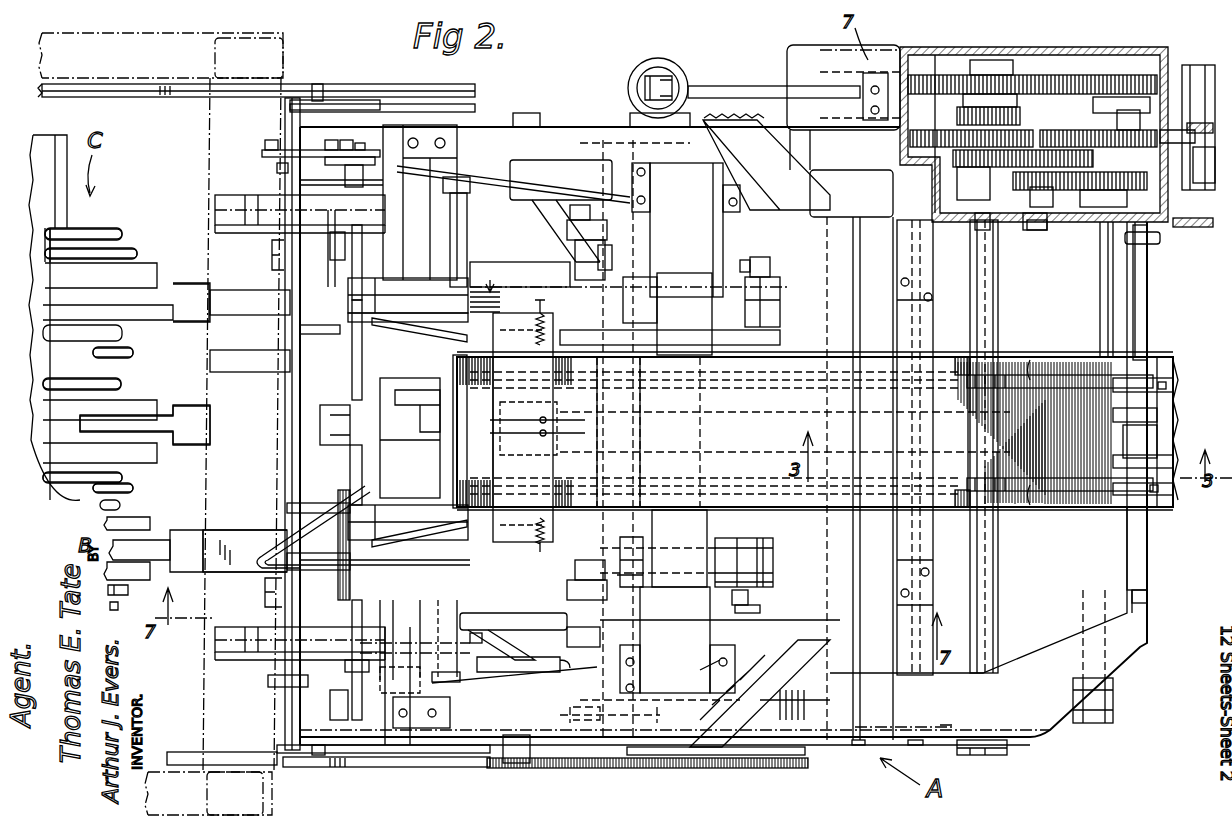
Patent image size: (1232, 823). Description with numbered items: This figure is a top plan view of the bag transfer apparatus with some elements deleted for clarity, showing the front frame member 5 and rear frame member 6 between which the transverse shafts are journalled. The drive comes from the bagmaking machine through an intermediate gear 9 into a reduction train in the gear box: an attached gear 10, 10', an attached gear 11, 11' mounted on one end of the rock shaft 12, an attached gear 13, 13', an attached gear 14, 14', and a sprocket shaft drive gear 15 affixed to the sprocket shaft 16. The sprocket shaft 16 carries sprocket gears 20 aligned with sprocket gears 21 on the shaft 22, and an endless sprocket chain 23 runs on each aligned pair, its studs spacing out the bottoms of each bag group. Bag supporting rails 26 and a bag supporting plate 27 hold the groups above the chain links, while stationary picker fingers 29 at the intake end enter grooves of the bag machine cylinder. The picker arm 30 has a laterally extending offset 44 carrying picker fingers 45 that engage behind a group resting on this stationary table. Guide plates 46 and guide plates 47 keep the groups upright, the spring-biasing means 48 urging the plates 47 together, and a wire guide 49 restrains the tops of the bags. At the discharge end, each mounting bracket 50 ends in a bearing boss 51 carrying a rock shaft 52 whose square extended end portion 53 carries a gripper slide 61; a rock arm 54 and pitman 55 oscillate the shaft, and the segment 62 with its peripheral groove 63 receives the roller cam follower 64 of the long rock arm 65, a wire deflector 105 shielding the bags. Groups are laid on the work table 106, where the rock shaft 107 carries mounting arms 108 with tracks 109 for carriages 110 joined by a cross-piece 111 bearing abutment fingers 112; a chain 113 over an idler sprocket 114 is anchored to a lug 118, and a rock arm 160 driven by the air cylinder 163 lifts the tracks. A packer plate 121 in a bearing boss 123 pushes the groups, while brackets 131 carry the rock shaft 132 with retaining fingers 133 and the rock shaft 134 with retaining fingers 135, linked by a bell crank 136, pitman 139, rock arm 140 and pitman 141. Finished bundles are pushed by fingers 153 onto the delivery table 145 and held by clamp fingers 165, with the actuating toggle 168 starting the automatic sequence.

The front frame member 5 is at (1035, 742).
The rear frame member 6 is at (580, 127).
The intermediate gear 9 is at (1210, 110).
The attached gear 10 is at (1043, 83).
The attached gear 10' is at (1051, 120).
The attached gear 11 is at (1032, 63).
The attached gear 11' is at (1019, 68).
The rock shaft 12 is at (990, 322).
The attached gear 13 is at (759, 365).
The attached gear 13' is at (945, 112).
The attached gear 14 is at (665, 447).
The attached gear 14' is at (948, 478).
The sprocket shaft drive gear 15 is at (1195, 227).
The sprocket shaft 16 is at (1150, 303).
The sprocket gears 20 is at (1083, 375).
The sprocket gears 21 is at (430, 340).
The shaft 22 is at (481, 278).
The sprocket chain 23 is at (960, 362).
The bag supporting rails 26 is at (1033, 360).
The bag supporting plate 27 is at (1110, 432).
The stationary picker fingers 29 is at (1180, 370).
The picker arm 30 is at (1140, 441).
The laterally extending offset 44 is at (1173, 437).
The picker fingers 45 is at (1140, 385).
The guide plates 46 is at (815, 455).
The guide plates 47 is at (740, 470).
The spring-biasing means 48 is at (535, 336).
The wire guide 49 is at (543, 440).
The mounting bracket 50 is at (723, 215).
The bearing boss 51 is at (690, 357).
The rock shaft 52 is at (780, 285).
The extended end portion 53 is at (415, 290).
The rock arm 54 is at (770, 267).
The pitman 55 is at (748, 260).
The gripper slide 61 is at (522, 262).
The upwardly projecting segment 62 is at (567, 235).
The peripheral groove 63 is at (612, 262).
The roller cam follower 64 is at (590, 238).
The rock arm 65 is at (530, 175).
The wire deflector 105 is at (360, 336).
The work table 106 is at (267, 332).
The rock shaft 107 is at (825, 335).
The mounting arms 108 is at (760, 145).
The track 109 is at (70, 100).
The carriage 110 is at (430, 104).
The cross-piece 111 is at (318, 84).
The abutment fingers 112 is at (272, 262).
The chain 113 is at (575, 768).
The idler sprocket 114 is at (825, 782).
The lug 118 is at (525, 113).
The packer plate 121 is at (450, 208).
The bearing boss 123 is at (423, 431).
The brackets 131 is at (277, 168).
The rock shaft 132 is at (352, 385).
The retaining fingers 133 is at (300, 296).
The rock shaft 134 is at (215, 210).
The retaining fingers 135 is at (337, 280).
The bell crank 136 is at (345, 180).
The pitman 139 is at (285, 130).
The rock arm 140 is at (262, 153).
The pitman 141 is at (365, 104).
The delivery table 145 is at (142, 345).
The fingers 153 is at (122, 234).
The rock arm 160 is at (768, 86).
The air cylinder 163 is at (660, 58).
The clamp fingers 165 is at (137, 253).
The actuating toggle 168 is at (272, 448).